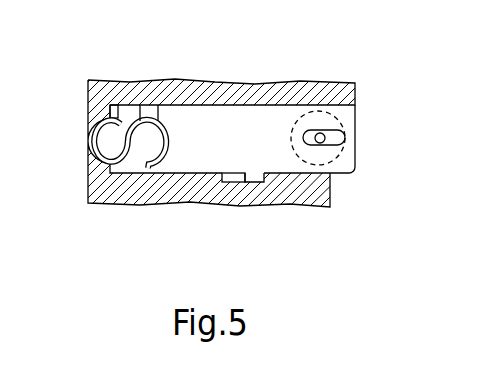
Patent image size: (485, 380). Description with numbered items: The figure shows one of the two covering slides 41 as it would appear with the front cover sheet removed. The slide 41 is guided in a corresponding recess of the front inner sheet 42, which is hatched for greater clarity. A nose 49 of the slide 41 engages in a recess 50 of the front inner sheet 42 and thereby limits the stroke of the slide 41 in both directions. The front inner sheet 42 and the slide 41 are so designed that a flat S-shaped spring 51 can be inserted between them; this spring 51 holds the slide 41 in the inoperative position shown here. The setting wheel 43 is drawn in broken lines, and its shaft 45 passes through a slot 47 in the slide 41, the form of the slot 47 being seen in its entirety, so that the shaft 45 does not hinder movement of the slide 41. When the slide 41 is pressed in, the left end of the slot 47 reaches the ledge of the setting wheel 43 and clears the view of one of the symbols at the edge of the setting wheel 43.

The slide 41 is at (353, 175).
The front inner sheet 42 is at (253, 83).
The setting wheel 43 is at (332, 122).
The shaft 45 is at (323, 142).
The slot 47 is at (340, 138).
The nose 49 is at (253, 181).
The recess 50 is at (229, 181).
The flat S-shaped spring 51 is at (142, 120).